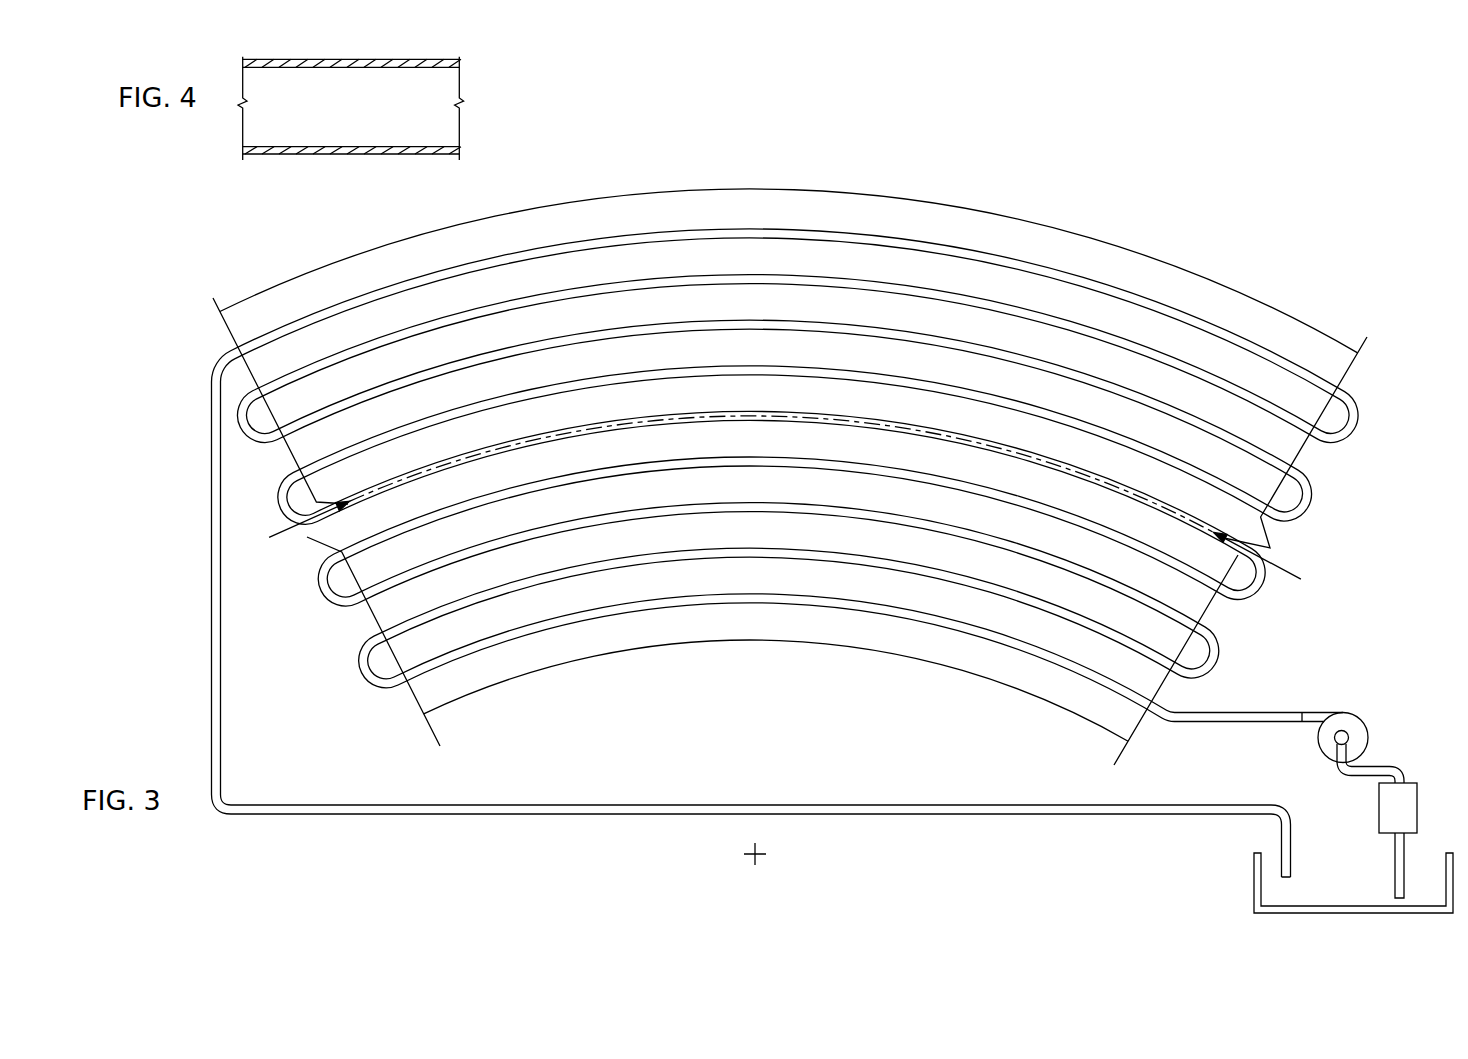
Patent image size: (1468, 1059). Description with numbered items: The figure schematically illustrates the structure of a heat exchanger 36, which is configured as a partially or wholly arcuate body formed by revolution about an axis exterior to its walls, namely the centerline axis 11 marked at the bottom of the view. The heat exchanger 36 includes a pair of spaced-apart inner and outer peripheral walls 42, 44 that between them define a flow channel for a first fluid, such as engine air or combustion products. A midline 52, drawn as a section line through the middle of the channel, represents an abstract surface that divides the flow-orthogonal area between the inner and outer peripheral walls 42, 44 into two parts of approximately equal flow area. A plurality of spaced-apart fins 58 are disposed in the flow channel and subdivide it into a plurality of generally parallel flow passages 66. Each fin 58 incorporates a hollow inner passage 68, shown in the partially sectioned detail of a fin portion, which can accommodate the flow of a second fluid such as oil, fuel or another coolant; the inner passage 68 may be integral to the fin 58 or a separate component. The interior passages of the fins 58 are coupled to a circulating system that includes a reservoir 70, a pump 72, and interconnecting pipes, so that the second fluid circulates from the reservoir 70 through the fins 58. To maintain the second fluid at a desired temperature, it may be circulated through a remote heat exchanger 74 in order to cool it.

In FIG. 3, the centerline axis 11 is at (763, 850).
In FIG. 3, the heat exchanger 36 is at (1280, 298).
In FIG. 3, the inner peripheral wall 42 is at (1033, 695).
In FIG. 3, the outer peripheral wall 44 is at (1137, 251).
In FIG. 3, the midline 52 is at (1278, 567).
In FIG. 3, the fin 58 is at (347, 356).
In FIG. 4, the fin 58 is at (423, 48).
In FIG. 3, the flow passage 66 is at (1053, 267).
In FIG. 4, the inner passage 68 is at (337, 118).
In FIG. 3, the reservoir 70 is at (1256, 864).
In FIG. 3, the pump 72 is at (1352, 718).
In FIG. 3, the remote heat exchanger 74 is at (1386, 822).